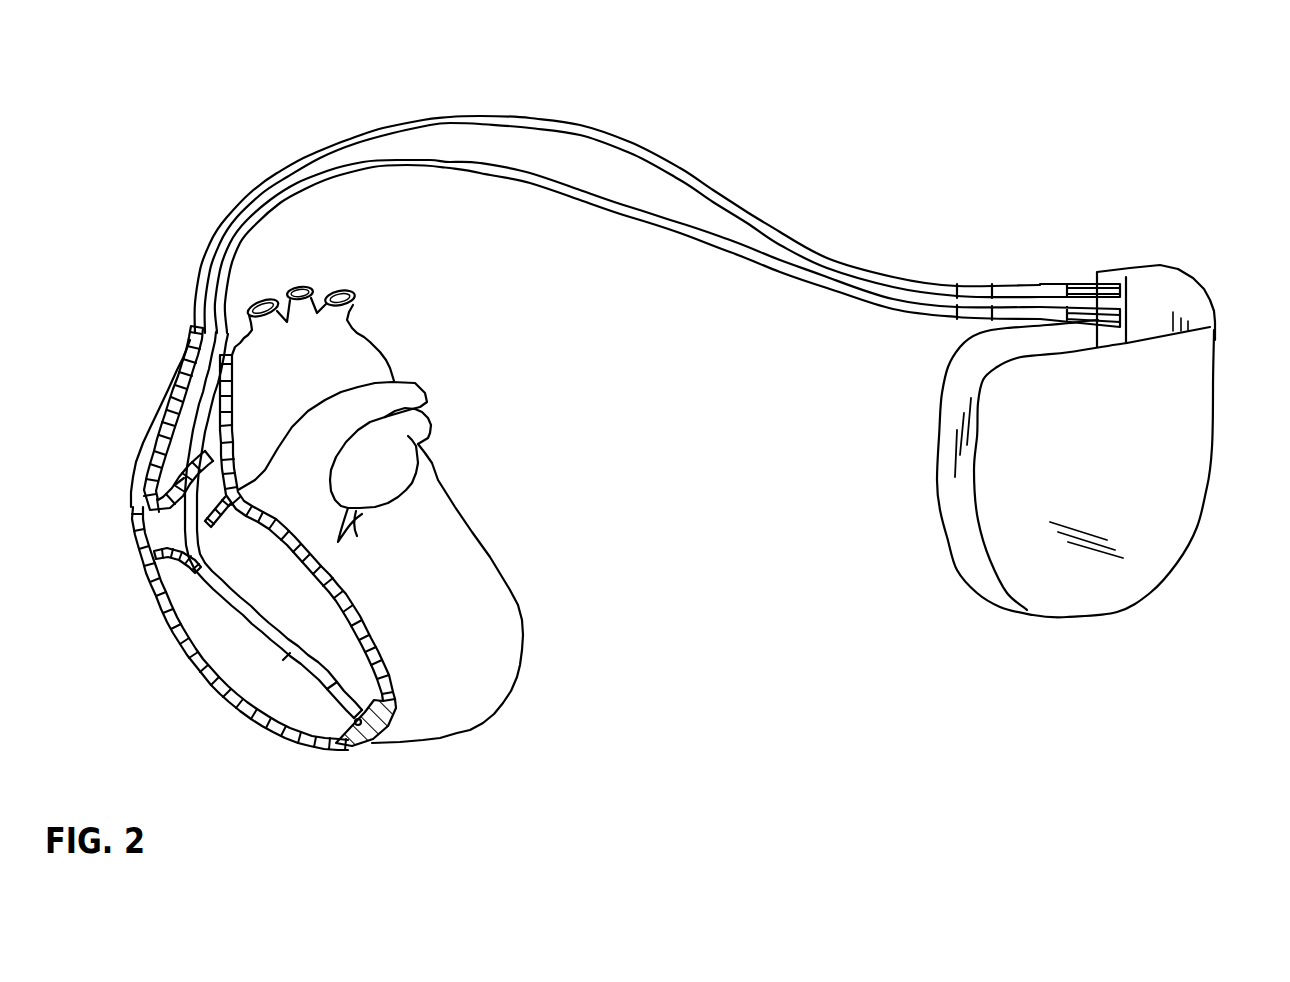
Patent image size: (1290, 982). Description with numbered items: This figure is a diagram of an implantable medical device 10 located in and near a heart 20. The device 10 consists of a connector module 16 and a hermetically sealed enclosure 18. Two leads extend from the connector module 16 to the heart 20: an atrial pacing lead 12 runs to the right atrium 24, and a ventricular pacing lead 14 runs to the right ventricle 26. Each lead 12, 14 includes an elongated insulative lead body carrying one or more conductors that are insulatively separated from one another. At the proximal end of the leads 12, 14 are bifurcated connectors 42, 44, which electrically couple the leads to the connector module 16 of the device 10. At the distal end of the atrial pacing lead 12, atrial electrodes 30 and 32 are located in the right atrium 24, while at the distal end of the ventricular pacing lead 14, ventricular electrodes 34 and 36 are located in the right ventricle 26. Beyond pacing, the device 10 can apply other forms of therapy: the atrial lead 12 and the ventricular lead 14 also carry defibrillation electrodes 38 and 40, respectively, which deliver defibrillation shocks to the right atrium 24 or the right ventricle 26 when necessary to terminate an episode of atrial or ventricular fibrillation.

The implantable medical device 10 is at (1185, 143).
The atrial pacing lead 12 is at (808, 253).
The ventricular pacing lead 14 is at (720, 247).
The connector module 16 is at (1157, 285).
The hermetically sealed enclosure 18 is at (1110, 598).
The heart 20 is at (520, 634).
The right atrium 24 is at (170, 470).
The right ventricle 26 is at (240, 667).
The atrial electrode 30 is at (215, 455).
The atrial electrode 32 is at (178, 486).
The ventricular electrode 34 is at (363, 726).
The ventricular electrode 36 is at (331, 711).
The defibrillation electrode 38 is at (161, 418).
The defibrillation electrode 40 is at (287, 657).
The bifurcated connector 42 is at (1062, 290).
The bifurcated connector 44 is at (1037, 318).